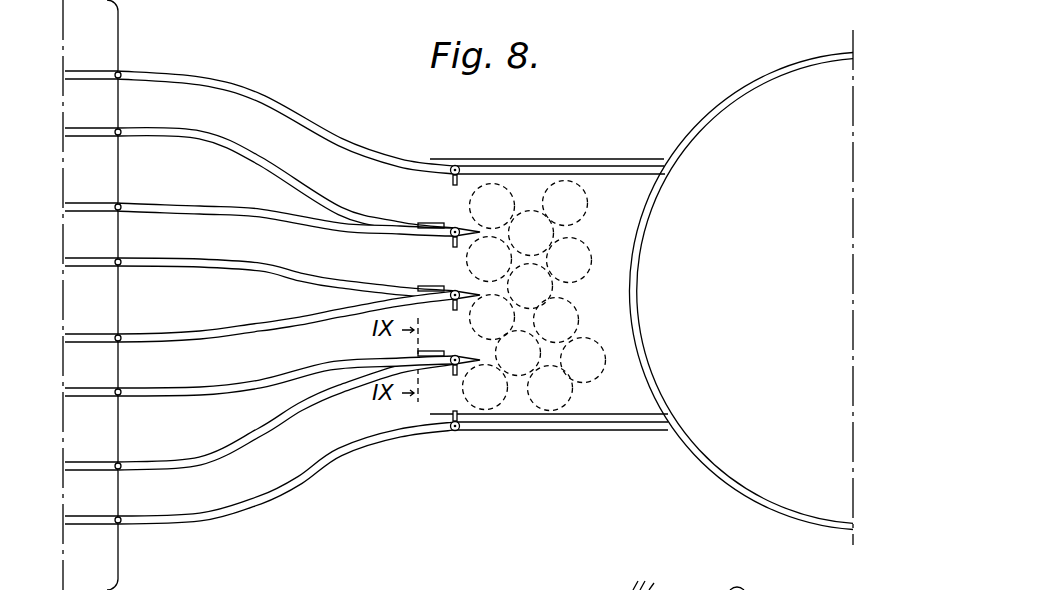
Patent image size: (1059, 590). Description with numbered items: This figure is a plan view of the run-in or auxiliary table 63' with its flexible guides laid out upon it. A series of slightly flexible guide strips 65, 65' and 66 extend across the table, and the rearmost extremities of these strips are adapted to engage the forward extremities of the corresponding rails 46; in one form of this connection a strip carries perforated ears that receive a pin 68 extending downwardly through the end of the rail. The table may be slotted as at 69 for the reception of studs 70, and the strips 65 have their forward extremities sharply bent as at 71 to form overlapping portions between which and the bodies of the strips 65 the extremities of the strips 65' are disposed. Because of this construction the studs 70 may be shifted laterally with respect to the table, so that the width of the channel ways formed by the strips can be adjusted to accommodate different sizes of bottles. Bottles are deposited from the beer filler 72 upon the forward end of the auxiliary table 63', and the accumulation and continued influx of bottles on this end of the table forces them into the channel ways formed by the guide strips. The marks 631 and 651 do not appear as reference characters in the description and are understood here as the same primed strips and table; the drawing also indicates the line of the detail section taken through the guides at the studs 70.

The rails 46 is at (93, 78).
The auxiliary table 63' is at (192, 425).
The bottle channel 631 is at (192, 425).
The flexible guide strips 65 is at (299, 299).
The flexible guide strips 65' is at (286, 299).
The converging guide rails 651 is at (308, 278).
The flexible guide strips 66 is at (310, 128).
The pin 68 is at (125, 203).
The slot 69 is at (451, 306).
The studs 70 is at (460, 169).
The sharply bent forward extremities 71 is at (516, 243).
The beer filler 72 is at (741, 291).